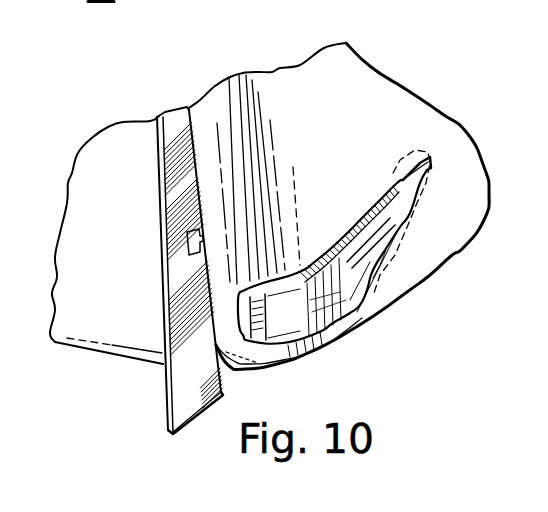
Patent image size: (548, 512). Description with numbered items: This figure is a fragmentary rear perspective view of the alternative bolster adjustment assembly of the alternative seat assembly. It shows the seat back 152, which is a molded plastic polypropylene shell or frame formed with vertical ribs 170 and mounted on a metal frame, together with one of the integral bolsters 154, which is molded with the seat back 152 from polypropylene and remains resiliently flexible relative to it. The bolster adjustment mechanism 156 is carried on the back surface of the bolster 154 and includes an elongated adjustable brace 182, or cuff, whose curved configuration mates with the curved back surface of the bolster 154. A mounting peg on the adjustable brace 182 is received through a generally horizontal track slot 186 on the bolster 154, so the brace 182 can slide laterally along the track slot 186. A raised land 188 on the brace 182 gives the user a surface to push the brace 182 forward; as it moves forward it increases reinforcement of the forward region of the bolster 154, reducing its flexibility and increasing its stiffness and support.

The seat back 152 is at (106, 160).
The bolster 154 is at (361, 88).
The bolster adjustment mechanism 156 is at (393, 130).
The vertical ribs 170 is at (183, 205).
The adjustable brace 182 is at (373, 278).
The track slot 186 is at (421, 153).
The raised land 188 is at (327, 323).